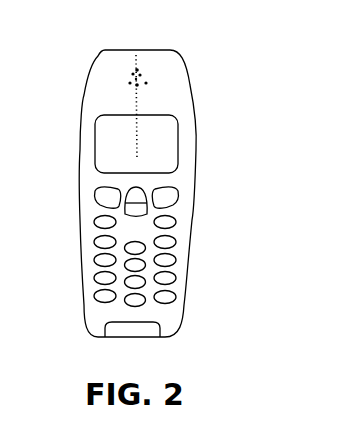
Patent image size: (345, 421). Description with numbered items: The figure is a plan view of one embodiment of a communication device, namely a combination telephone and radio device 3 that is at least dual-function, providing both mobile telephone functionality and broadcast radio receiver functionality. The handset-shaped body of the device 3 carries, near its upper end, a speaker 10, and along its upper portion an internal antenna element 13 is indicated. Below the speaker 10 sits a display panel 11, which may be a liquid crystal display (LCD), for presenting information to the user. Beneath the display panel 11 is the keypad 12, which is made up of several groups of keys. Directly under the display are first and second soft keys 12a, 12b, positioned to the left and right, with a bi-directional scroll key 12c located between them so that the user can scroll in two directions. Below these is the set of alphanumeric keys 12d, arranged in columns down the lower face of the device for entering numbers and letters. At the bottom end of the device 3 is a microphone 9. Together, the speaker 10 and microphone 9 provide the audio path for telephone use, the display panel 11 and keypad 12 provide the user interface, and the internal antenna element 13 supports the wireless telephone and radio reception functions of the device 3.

The combination telephone and radio device 3 is at (68, 297).
The microphone 9 is at (137, 330).
The speaker 10 is at (139, 73).
The display panel 11 is at (163, 128).
The keypad 12 is at (178, 276).
The first soft key 12a is at (105, 198).
The second soft key 12b is at (165, 197).
The bi-directional scroll key 12c is at (128, 208).
The set of alphanumeric keys 12d is at (168, 296).
The internal antenna element 13 is at (136, 57).